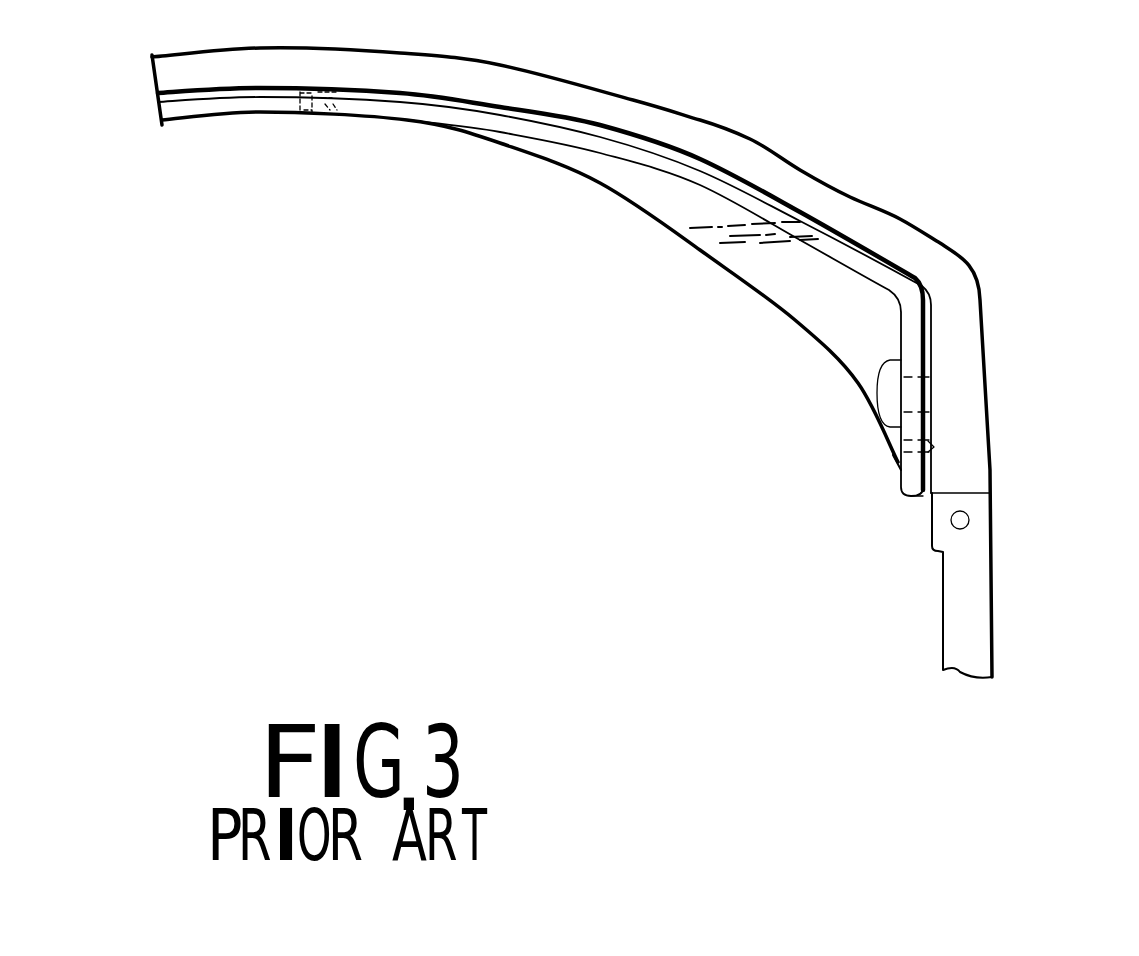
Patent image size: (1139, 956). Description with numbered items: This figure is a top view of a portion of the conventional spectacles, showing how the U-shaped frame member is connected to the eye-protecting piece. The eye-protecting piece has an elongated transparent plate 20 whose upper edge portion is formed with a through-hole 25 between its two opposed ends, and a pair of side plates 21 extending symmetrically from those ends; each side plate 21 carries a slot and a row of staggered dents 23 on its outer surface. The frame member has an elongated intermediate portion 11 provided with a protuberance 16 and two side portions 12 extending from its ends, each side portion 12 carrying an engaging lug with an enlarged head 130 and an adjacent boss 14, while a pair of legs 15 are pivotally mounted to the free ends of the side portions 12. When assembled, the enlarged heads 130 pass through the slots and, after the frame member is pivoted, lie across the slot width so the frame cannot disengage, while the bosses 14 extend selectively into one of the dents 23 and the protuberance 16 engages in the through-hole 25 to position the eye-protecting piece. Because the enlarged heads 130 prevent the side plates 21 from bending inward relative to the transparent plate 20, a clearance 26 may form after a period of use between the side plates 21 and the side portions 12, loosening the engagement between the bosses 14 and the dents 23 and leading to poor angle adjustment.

The intermediate portion 11 is at (817, 180).
The side portions 12 is at (985, 373).
The boss 14 is at (931, 447).
The legs 15 is at (965, 612).
The protuberance 16 is at (313, 117).
The transparent plate 20 is at (417, 123).
The side plates 21 is at (905, 482).
The dents 23 is at (893, 462).
The through-hole 25 is at (340, 123).
The clearance 26 is at (927, 497).
The enlarged head 130 is at (890, 385).